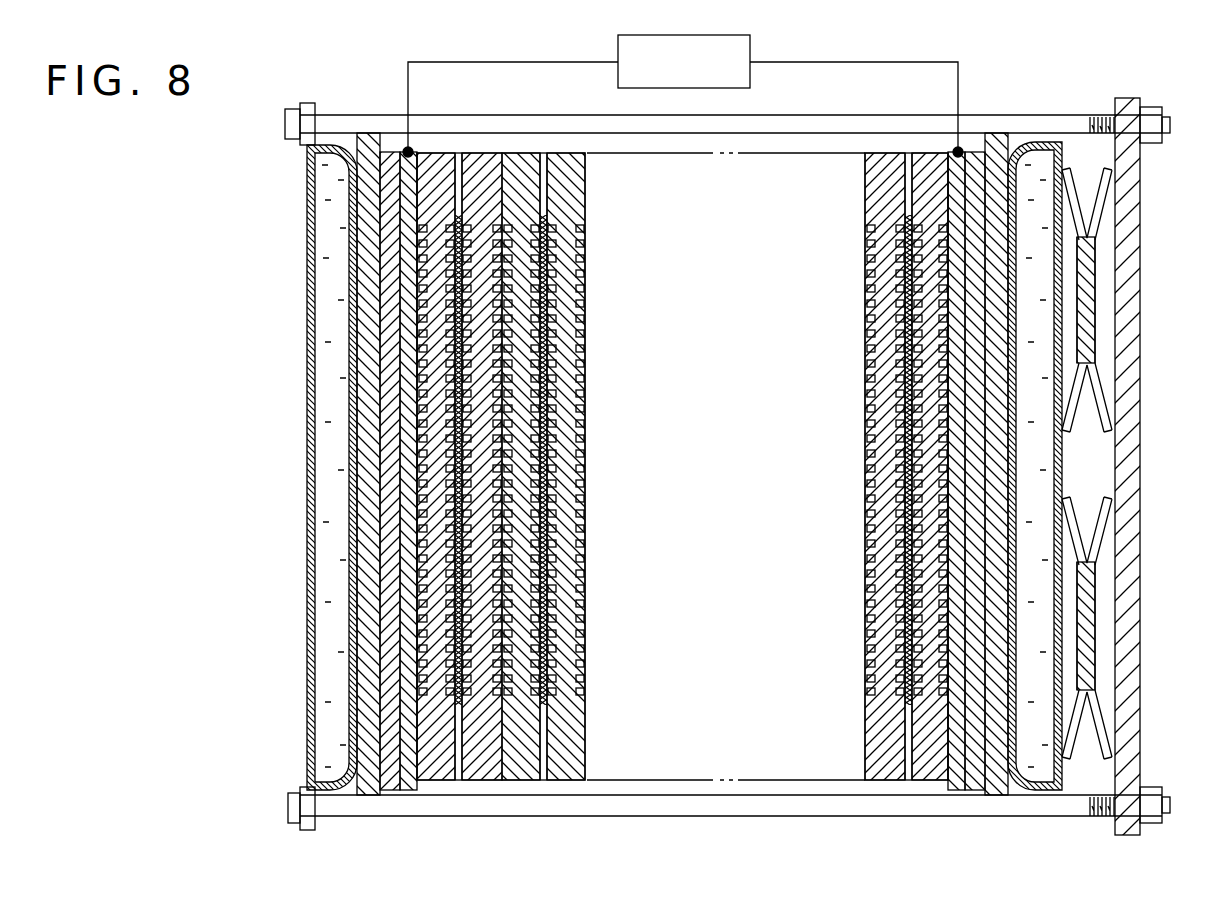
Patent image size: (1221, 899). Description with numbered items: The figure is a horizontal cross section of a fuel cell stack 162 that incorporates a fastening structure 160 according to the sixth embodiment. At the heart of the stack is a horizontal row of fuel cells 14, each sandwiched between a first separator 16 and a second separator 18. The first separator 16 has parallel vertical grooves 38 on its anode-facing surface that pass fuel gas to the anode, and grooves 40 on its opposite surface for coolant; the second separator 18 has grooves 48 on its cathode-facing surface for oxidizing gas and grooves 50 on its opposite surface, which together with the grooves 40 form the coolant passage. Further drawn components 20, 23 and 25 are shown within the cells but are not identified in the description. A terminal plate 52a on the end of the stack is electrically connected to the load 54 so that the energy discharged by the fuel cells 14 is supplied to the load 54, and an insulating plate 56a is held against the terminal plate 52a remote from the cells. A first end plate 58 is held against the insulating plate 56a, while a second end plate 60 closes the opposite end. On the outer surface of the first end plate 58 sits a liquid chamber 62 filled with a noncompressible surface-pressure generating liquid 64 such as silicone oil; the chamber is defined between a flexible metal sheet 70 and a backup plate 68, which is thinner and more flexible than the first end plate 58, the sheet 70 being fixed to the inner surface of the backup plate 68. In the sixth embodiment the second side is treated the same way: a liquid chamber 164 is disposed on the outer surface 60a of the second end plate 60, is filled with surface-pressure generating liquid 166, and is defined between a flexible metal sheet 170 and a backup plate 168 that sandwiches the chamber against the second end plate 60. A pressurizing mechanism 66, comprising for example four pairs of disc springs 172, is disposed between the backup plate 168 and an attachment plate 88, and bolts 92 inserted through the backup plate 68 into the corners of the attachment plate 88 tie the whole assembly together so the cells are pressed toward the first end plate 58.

The fuel cell 14 is at (541, 152).
The first separator 16 is at (590, 198).
The second separator 18 is at (521, 160).
The separator 20 is at (548, 783).
The mesh layer 23 is at (590, 680).
The mesh layer 25 is at (558, 598).
The grooves 38 is at (586, 455).
The grooves 40 is at (590, 380).
The grooves 48 is at (867, 340).
The grooves 50 is at (867, 273).
The terminal plate 52a is at (408, 775).
The load 54 is at (752, 46).
The insulating plate 56a is at (393, 778).
The first end plate 58 is at (369, 130).
The second end plate 60 is at (1003, 133).
The outer surface of second end plate 60a is at (1062, 203).
The liquid chamber 62 is at (287, 467).
The surface-pressure generating liquid 64 is at (325, 312).
The pressurizing mechanism 66 is at (1100, 583).
The backup plate 68 is at (307, 480).
The flexible metal sheet 70 is at (353, 600).
The attachment plate 88 is at (1140, 712).
The bolts 92 is at (463, 123).
The fastening structure 160 is at (1088, 103).
The fuel cell stack 162 is at (1098, 403).
The liquid chamber 164 is at (1037, 383).
The surface-pressure generating liquid 166 is at (1040, 262).
The backup plate 168 is at (1067, 458).
The flexible metal sheet 170 is at (1017, 472).
The disc springs 172 is at (1090, 313).